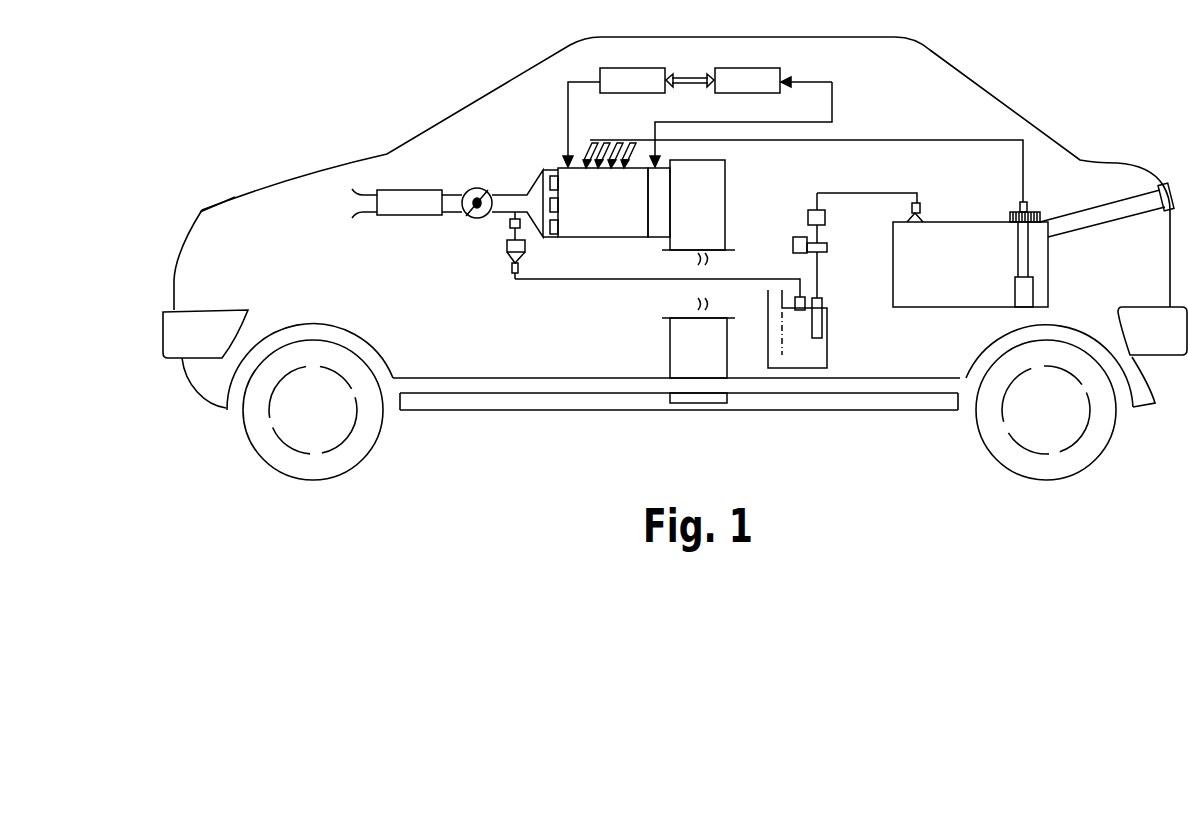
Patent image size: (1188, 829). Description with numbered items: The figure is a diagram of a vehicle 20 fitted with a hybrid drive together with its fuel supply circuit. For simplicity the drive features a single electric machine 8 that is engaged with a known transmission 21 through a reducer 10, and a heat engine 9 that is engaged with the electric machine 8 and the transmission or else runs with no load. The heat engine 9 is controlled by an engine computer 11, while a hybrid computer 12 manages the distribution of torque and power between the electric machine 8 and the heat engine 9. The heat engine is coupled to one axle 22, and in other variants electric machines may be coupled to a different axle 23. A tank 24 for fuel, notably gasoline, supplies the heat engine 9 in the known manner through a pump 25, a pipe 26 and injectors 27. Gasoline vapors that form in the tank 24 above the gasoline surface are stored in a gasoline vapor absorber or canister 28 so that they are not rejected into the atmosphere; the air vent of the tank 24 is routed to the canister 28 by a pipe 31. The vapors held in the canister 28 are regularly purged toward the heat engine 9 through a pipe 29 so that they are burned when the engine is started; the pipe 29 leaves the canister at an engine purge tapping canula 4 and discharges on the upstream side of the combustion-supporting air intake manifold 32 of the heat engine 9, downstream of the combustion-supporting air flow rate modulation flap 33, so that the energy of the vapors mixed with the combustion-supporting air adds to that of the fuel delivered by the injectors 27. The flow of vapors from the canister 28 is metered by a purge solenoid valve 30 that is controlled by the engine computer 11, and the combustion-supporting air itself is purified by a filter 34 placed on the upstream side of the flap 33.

The vehicle 20 is at (427, 54).
The engine computer 11 is at (644, 78).
The hybrid computer 12 is at (747, 78).
The pipe 26 is at (921, 140).
The injectors 27 is at (585, 160).
The combustion-supporting air intake manifold 32 is at (538, 187).
The combustion-supporting air flow rate modulation flap 33 is at (468, 189).
The reducer 10 is at (715, 171).
The pipe 31 is at (880, 193).
The engine purge tapping canula 4 is at (792, 245).
The tank 24 is at (975, 240).
The heat engine 9 is at (585, 226).
The electric machine 8 is at (657, 230).
The purge solenoid valve 30 is at (505, 245).
The filter 34 is at (397, 216).
The pipe 29 is at (582, 279).
The transmission 21 is at (675, 355).
The canister 28 is at (818, 352).
The pump 25 is at (1030, 291).
The axle 22 is at (358, 453).
The axle 23 is at (990, 433).